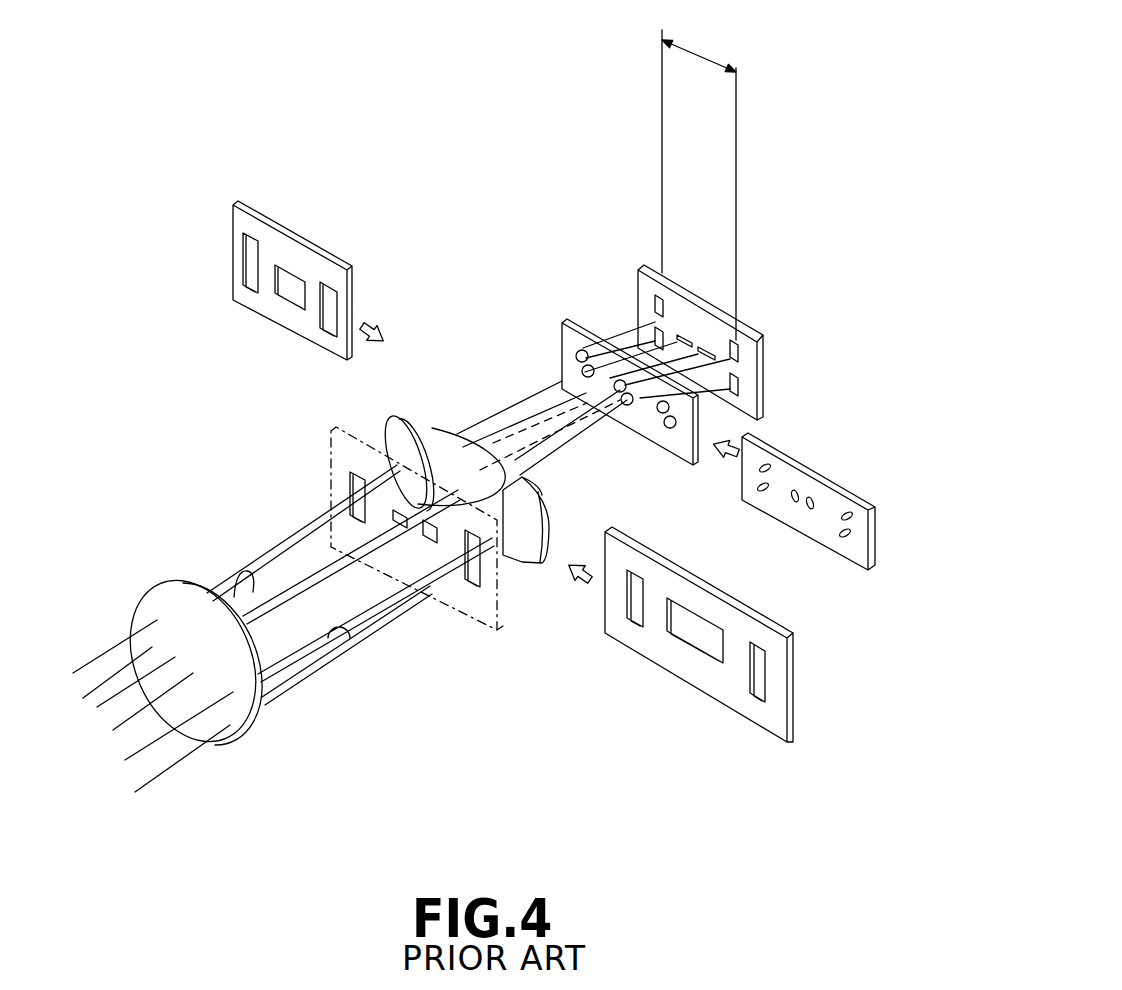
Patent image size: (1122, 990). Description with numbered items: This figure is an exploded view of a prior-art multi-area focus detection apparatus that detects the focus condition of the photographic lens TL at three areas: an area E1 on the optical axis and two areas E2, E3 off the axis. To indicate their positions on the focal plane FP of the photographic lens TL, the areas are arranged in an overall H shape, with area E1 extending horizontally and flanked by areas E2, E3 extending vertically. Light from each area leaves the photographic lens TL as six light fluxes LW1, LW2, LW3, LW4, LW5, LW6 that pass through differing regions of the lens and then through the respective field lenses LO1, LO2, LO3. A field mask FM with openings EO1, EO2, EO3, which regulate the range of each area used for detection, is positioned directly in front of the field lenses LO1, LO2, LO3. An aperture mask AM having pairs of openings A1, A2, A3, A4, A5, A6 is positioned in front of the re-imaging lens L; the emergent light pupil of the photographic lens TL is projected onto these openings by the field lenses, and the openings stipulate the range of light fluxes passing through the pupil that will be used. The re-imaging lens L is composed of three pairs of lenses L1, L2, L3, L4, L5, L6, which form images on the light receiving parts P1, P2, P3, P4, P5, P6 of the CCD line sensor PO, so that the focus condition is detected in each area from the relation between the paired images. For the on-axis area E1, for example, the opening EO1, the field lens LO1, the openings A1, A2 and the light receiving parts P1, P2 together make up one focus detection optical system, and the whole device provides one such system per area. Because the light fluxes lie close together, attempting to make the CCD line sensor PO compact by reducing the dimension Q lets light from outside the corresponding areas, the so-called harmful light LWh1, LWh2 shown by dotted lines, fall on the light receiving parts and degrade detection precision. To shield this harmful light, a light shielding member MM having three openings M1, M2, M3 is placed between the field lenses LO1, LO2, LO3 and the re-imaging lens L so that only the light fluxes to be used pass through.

The light shielding member MM is at (233, 260).
The opening M1 is at (289, 272).
The opening M2 is at (327, 283).
The opening M3 is at (250, 233).
The focal plane FP is at (331, 433).
The area E1 is at (428, 545).
The area E2 is at (477, 590).
The area E3 is at (350, 480).
The photographic lens TL is at (200, 735).
The light flux LW1 is at (320, 572).
The light flux LW2 is at (275, 618).
The light flux LW3 is at (350, 638).
The light flux LW4 is at (270, 697).
The light flux LW5 is at (219, 587).
The light flux LW6 is at (250, 580).
The field lens LO1 is at (462, 440).
The field lens LO2 is at (527, 553).
The field lens LO3 is at (395, 415).
The harmful light LWh1 is at (498, 392).
The harmful light LWh2 is at (530, 445).
The re-imaging lens L is at (575, 345).
The re-imaging lens L1 is at (620, 392).
The re-imaging lens L2 is at (615, 404).
The re-imaging lens L3 is at (665, 413).
The re-imaging lens L4 is at (674, 428).
The re-imaging lens L5 is at (582, 372).
The re-imaging lens L6 is at (581, 350).
The CCD line sensor PO is at (768, 380).
The light receiving part P1 is at (705, 347).
The light receiving part P2 is at (680, 335).
The light receiving part P3 is at (743, 372).
The light receiving part P4 is at (735, 342).
The light receiving part P5 is at (655, 333).
The light receiving part P6 is at (655, 300).
The sensor dimension Q is at (699, 181).
The aperture mask AM is at (875, 560).
The opening A1 is at (812, 509).
The opening A2 is at (795, 502).
The opening A3 is at (849, 531).
The opening A4 is at (845, 514).
The opening A5 is at (762, 490).
The opening A6 is at (767, 466).
The field mask FM is at (793, 638).
The opening EO1 is at (697, 653).
The opening EO2 is at (757, 702).
The opening EO3 is at (633, 627).